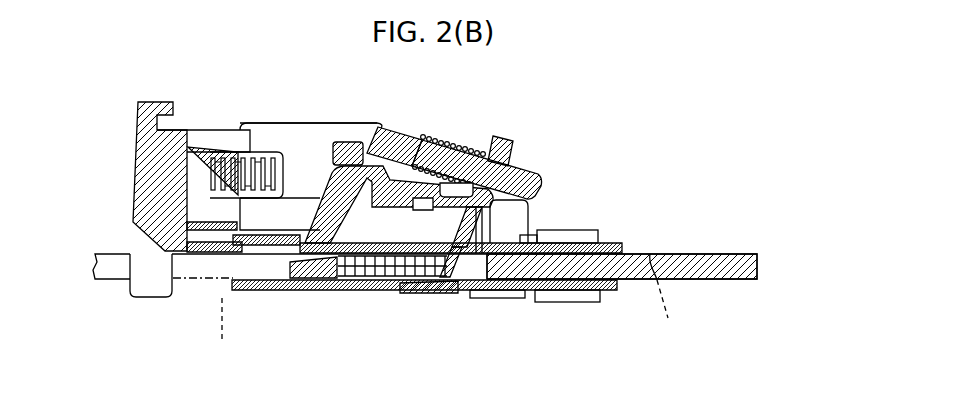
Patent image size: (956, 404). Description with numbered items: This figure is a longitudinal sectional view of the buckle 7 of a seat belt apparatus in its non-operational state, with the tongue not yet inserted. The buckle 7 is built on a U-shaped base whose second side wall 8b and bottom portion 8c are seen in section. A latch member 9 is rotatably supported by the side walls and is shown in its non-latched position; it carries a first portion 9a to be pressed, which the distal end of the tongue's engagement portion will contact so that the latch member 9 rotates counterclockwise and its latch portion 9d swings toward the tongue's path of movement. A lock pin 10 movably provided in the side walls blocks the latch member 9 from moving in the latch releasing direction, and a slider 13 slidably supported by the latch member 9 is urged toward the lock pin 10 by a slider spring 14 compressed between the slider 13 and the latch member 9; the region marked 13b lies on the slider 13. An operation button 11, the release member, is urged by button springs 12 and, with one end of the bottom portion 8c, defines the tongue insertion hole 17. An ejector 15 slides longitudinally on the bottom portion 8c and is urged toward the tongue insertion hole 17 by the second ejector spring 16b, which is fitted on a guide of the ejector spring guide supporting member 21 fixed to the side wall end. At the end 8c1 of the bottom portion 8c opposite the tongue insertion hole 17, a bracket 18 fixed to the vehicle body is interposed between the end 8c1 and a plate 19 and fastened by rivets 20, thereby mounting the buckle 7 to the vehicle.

The buckle 7 is at (233, 100).
The second side wall 8b is at (285, 122).
The bottom portion 8c is at (262, 291).
The end of the bottom portion 8c1 is at (590, 302).
The latch member 9 is at (326, 184).
The first portion to be pressed 9a is at (462, 262).
The latch portion 9d is at (315, 222).
The lock pin 10 is at (345, 141).
The operation button 11 is at (140, 160).
The button spring 12 is at (270, 162).
The slider 13 is at (404, 132).
The operating lever base 13b is at (372, 127).
The slider spring 14 is at (466, 150).
The ejector 15 is at (320, 276).
The second ejector spring 16b is at (388, 268).
The tongue insertion hole 17 is at (235, 268).
The bracket 18 is at (727, 280).
The plate 19 is at (618, 243).
The rivet 20 is at (578, 230).
The ejector spring guide supporting member 21 is at (527, 232).